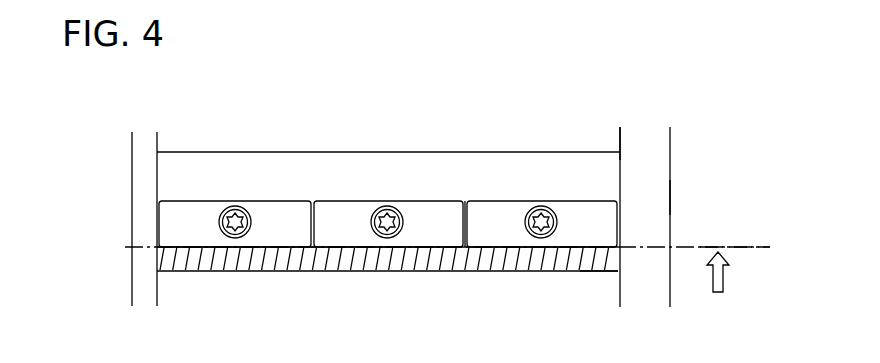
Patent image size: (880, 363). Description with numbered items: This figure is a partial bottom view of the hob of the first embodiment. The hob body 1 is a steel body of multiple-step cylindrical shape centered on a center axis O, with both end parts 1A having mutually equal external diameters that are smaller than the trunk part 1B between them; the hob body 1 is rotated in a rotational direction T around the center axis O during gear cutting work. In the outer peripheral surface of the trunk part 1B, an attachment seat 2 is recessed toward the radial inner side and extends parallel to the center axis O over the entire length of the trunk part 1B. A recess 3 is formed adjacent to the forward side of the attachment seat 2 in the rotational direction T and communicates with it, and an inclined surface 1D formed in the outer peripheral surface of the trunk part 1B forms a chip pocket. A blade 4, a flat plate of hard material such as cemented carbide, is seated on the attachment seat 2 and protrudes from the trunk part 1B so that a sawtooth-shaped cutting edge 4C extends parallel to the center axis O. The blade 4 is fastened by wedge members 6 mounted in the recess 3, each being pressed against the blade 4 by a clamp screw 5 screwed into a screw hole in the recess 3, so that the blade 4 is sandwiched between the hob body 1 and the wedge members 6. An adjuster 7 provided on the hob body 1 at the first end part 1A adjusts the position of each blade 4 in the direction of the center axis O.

The hob body 1 is at (692, 142).
The end parts 1A is at (662, 198).
The trunk part 1B is at (611, 140).
The inclined surface 1D is at (173, 172).
The attachment seat 2 is at (598, 284).
The recess 3 is at (206, 188).
The blade 4 is at (473, 262).
The cutting edge 4C is at (492, 247).
The clamp screw 5 is at (244, 209).
The wedge members 6 is at (282, 213).
The adjuster 7 is at (137, 177).
The center axis O is at (727, 246).
The rotational direction T is at (725, 275).